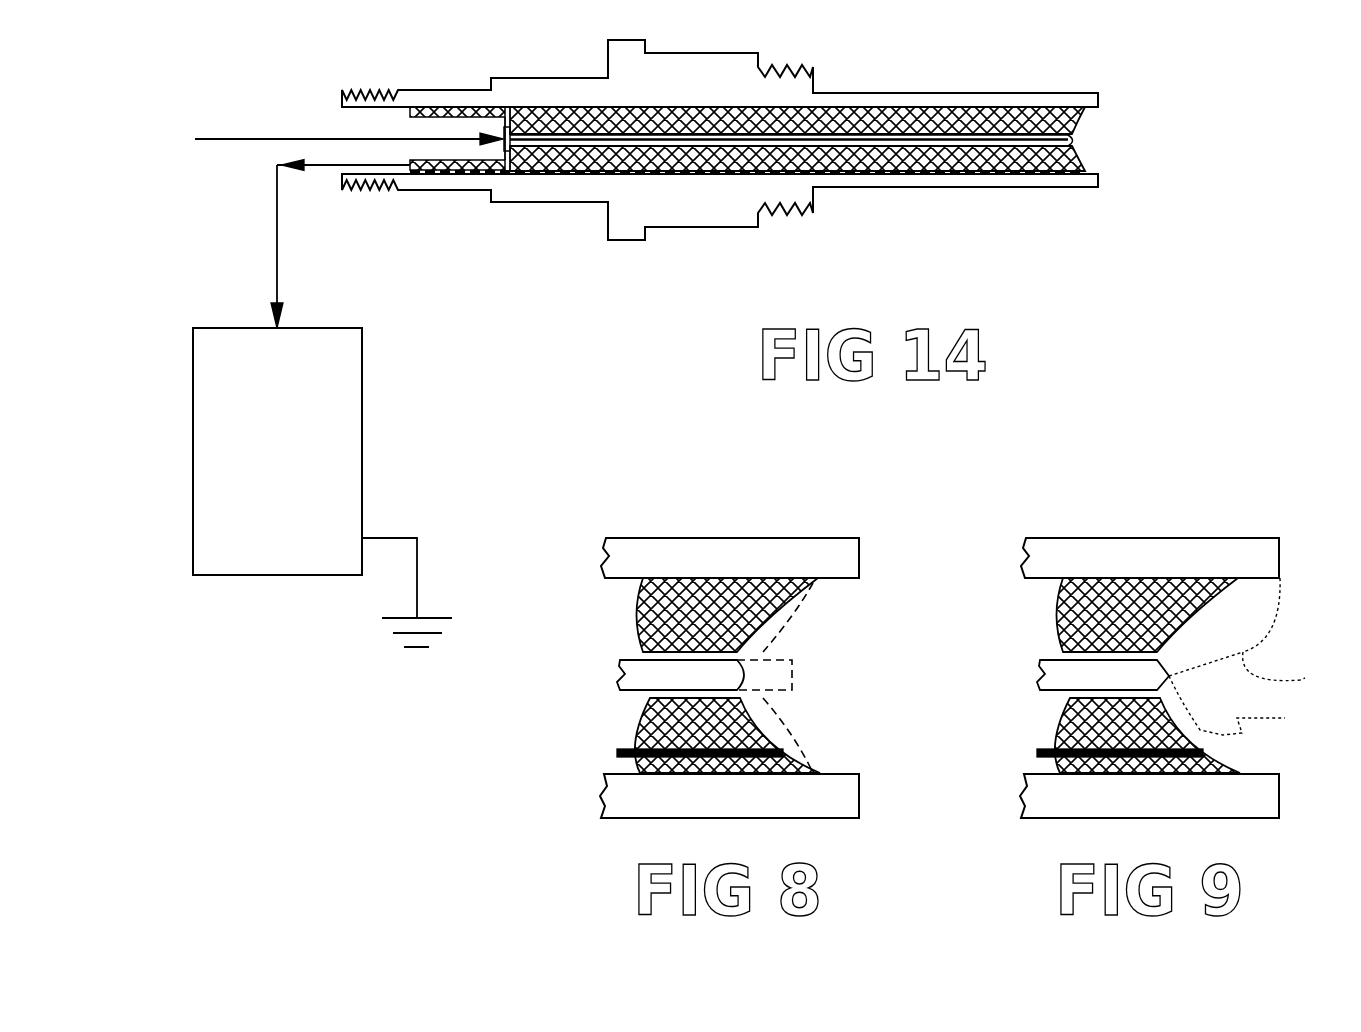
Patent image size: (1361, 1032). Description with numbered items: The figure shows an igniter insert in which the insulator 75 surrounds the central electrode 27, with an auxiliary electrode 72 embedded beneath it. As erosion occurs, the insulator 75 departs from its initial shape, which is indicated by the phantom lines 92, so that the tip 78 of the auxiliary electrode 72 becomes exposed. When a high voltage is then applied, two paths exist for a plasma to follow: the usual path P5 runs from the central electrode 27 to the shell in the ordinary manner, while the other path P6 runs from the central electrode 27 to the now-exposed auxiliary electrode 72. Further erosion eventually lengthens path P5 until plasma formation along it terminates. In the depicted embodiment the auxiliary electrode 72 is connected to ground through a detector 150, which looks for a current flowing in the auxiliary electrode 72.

In FIG. 14, the auxiliary electrode 72 is at (425, 171).
In FIG. 8, the auxiliary electrode 72 is at (627, 747).
In FIG. 9, the auxiliary electrode 72 is at (1047, 747).
In FIG. 8, the insulator 75 is at (637, 612).
In FIG. 8, the tip 78 is at (804, 735).
In FIG. 8, the phantom lines 92 is at (793, 622).
In FIG. 9, the central electrode 27 is at (1057, 658).
In FIG. 14, the detector 150 is at (362, 408).
In FIG. 9, the path P5 is at (1256, 633).
In FIG. 14, the path P6 is at (1078, 137).
In FIG. 9, the path P6 is at (1249, 709).